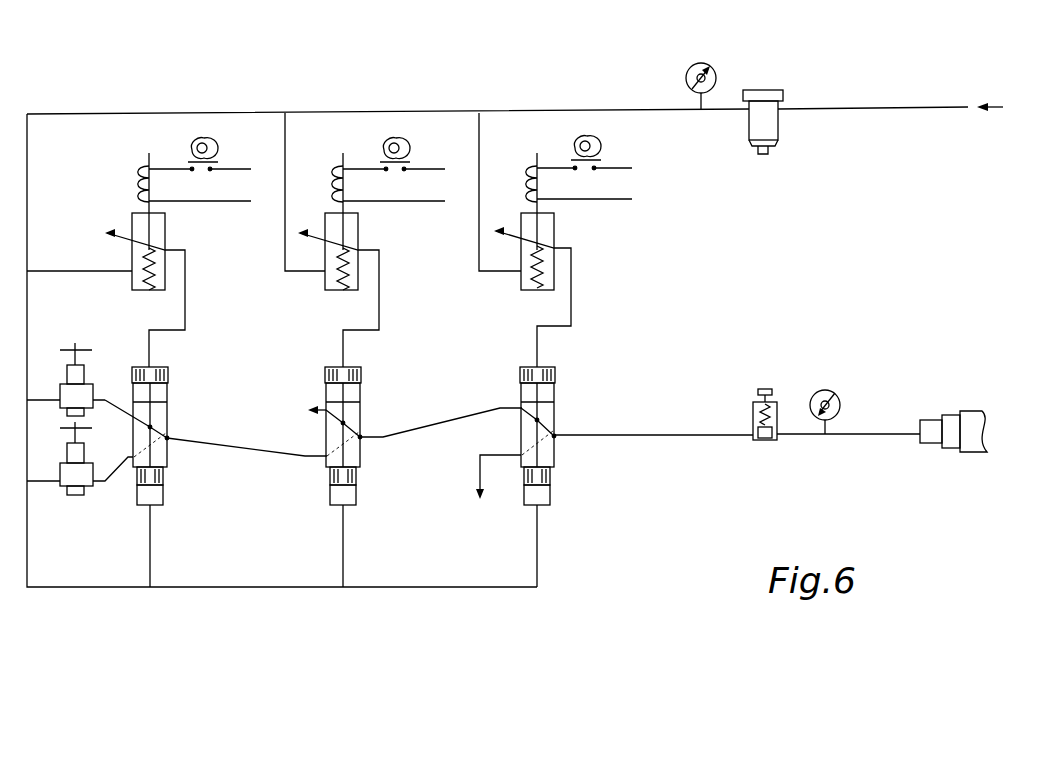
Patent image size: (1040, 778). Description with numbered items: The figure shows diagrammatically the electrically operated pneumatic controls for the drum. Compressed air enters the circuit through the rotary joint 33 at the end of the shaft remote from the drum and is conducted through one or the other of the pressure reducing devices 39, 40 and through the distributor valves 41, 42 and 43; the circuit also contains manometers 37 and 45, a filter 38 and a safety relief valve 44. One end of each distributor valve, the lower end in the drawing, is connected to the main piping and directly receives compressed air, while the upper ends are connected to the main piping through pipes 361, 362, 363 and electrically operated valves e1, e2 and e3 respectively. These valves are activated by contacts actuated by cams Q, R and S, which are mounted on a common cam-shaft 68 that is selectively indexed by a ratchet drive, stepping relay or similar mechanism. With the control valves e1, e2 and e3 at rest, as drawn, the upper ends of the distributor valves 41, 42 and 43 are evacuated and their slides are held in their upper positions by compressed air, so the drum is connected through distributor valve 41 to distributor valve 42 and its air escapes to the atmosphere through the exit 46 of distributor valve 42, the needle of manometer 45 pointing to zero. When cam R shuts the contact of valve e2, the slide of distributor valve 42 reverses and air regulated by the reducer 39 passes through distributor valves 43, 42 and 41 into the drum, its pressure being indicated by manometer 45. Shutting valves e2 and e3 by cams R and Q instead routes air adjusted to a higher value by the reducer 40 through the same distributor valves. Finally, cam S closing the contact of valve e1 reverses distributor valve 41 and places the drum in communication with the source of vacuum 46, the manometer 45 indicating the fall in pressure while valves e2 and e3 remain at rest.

The rotary joint 33 is at (972, 412).
The manometer 37 is at (701, 62).
The filter 38 is at (752, 148).
The pressure reducing device 39 is at (76, 350).
The pressure reducing device 40 is at (76, 496).
The distributor valve 41 is at (550, 503).
The distributor valve 42 is at (356, 503).
The distributor valve 43 is at (163, 505).
The safety relief valve 44 is at (762, 388).
The manometer 45 is at (832, 392).
The exit / source of vacuum 46 is at (392, 467).
The cam-shaft 68 is at (383, 182).
The pipe 361 is at (560, 240).
The pipe 362 is at (335, 240).
The pipe 363 is at (142, 290).
The electrically operated valve e1 is at (510, 279).
The electrically operated valve e2 is at (286, 274).
The electrically operated valve e3 is at (112, 280).
The cam Q is at (176, 134).
The cam R is at (366, 134).
The cam S is at (569, 133).